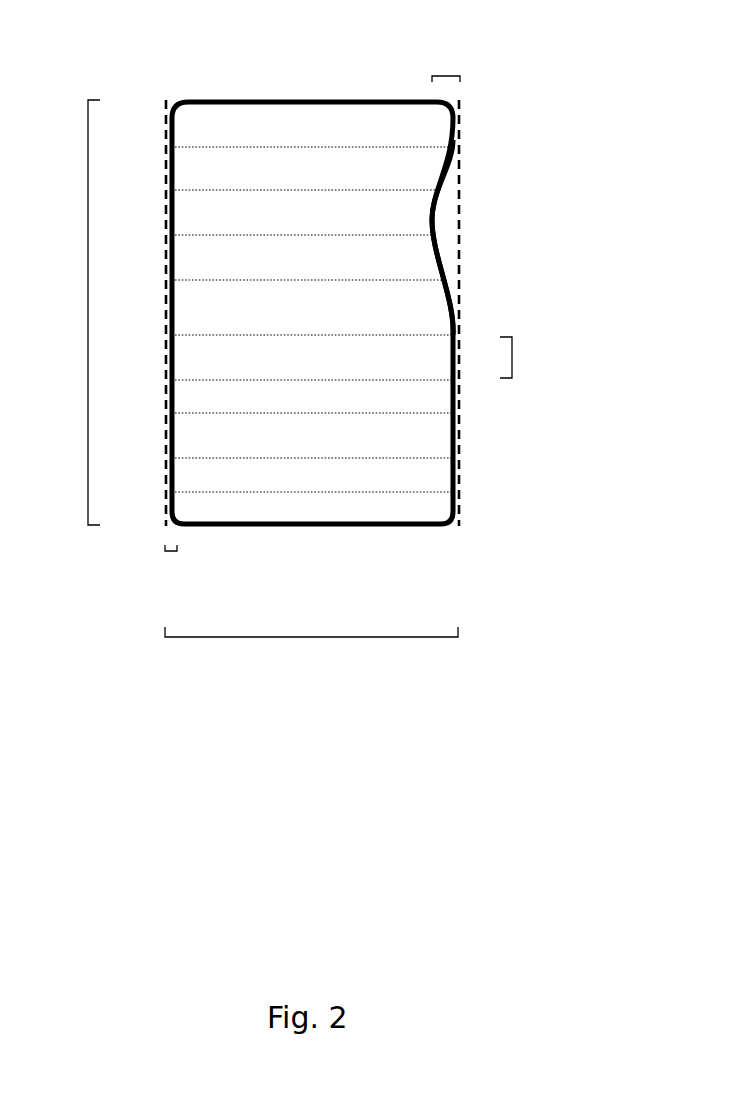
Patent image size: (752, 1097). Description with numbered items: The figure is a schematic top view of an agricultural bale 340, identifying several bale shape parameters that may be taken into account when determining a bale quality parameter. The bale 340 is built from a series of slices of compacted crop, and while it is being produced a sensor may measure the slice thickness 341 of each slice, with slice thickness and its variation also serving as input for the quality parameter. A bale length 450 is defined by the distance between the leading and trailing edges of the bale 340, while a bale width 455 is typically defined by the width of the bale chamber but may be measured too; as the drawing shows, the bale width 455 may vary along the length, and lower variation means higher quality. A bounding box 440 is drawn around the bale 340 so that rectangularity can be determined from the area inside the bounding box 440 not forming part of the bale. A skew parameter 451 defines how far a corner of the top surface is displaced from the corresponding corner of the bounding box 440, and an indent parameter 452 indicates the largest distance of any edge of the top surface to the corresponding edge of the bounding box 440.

The agricultural bale 340 is at (330, 325).
The slice thickness 341 is at (512, 357).
The bounding box 440 is at (458, 203).
The bale length 450 is at (88, 313).
The skew parameter 451 is at (171, 551).
The indent parameter 452 is at (446, 76).
The bale width 455 is at (312, 637).